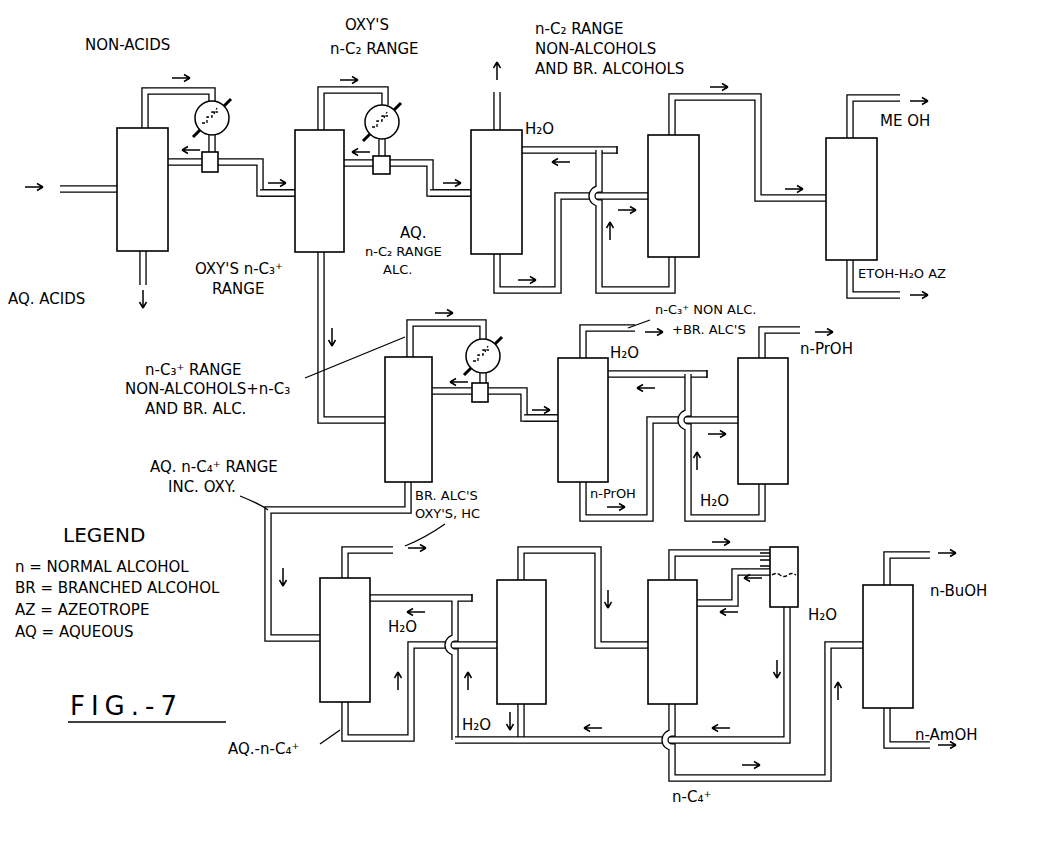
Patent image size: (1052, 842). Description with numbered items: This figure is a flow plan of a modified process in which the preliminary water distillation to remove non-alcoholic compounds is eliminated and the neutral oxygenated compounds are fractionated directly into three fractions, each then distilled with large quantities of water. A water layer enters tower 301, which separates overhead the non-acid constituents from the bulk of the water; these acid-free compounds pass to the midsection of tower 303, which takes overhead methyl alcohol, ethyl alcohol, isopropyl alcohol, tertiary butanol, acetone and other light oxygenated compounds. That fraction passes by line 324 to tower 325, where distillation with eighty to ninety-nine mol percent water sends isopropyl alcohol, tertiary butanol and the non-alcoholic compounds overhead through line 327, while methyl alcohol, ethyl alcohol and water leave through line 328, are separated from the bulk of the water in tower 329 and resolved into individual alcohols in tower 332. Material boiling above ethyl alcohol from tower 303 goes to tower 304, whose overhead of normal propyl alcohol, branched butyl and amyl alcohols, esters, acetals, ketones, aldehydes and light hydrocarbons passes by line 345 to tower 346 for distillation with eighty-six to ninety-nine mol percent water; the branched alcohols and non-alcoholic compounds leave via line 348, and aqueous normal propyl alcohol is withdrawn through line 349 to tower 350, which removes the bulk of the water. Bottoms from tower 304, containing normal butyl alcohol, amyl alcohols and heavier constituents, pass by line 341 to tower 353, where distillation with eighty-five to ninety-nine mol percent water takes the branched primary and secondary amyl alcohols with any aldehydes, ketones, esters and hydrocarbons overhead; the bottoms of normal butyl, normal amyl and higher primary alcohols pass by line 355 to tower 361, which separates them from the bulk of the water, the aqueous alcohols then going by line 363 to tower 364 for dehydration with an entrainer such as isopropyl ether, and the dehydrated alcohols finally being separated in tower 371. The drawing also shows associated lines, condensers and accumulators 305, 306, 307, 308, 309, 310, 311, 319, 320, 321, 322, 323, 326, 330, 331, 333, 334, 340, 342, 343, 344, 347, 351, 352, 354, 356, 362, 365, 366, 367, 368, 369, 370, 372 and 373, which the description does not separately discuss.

The tower 301 is at (117, 154).
The tower 303 is at (342, 232).
The tower 304 is at (384, 458).
The feed line 305 is at (80, 196).
The overhead line 306 is at (154, 76).
The aqueous acids bottoms line 307 is at (138, 276).
The condenser 308 is at (224, 106).
The accumulator 309 is at (218, 154).
The reflux line 310 is at (174, 166).
The transfer line 311 is at (272, 202).
The overhead line 319 is at (334, 89).
The bottoms line 320 is at (312, 342).
The condenser 321 is at (394, 106).
The accumulator 322 is at (390, 152).
The reflux line 323 is at (348, 167).
The line 324 is at (456, 200).
The tower 325 is at (514, 178).
The water feed line 326 is at (616, 146).
The line 327 is at (539, 70).
The line 328 is at (492, 280).
The tower 329 is at (696, 218).
The water recycle line 330 is at (679, 282).
The overhead line 331 is at (742, 96).
The tower 332 is at (872, 200).
The methanol line 333 is at (890, 98).
The ethanol-water azeotrope line 334 is at (880, 298).
The overhead line 340 is at (417, 326).
The line 341 is at (260, 532).
The condenser 342 is at (496, 346).
The accumulator 343 is at (488, 386).
The reflux line 344 is at (436, 393).
The line 345 is at (524, 428).
The tower 346 is at (604, 404).
The water feed line 347 is at (697, 370).
The line 348 is at (588, 330).
The line 349 is at (583, 510).
The tower 350 is at (784, 412).
The water recycle line 351 is at (770, 505).
The n-propanol line 352 is at (770, 330).
The tower 353 is at (320, 676).
The overhead line 354 is at (368, 546).
The line 355 is at (358, 742).
The water feed line 356 is at (389, 592).
The tower 361 is at (543, 684).
The water bottoms line 362 is at (528, 716).
The line 363 is at (555, 548).
The tower 364 is at (694, 680).
The reflux line 365 is at (740, 604).
The overhead line 366 is at (664, 552).
The decanter 367 is at (797, 566).
The decanter inlet 368 is at (754, 552).
The water line 369 is at (575, 746).
The bottoms line 370 is at (834, 778).
The tower 371 is at (910, 655).
The n-butanol line 372 is at (915, 552).
The n-amyl alcohol line 373 is at (918, 750).